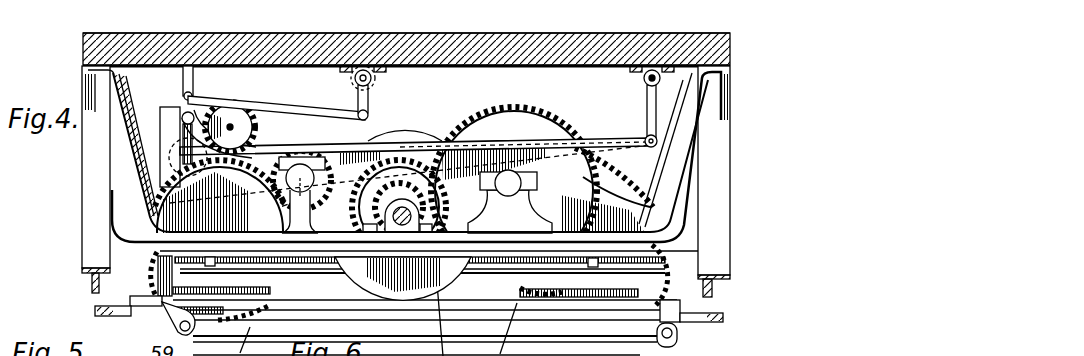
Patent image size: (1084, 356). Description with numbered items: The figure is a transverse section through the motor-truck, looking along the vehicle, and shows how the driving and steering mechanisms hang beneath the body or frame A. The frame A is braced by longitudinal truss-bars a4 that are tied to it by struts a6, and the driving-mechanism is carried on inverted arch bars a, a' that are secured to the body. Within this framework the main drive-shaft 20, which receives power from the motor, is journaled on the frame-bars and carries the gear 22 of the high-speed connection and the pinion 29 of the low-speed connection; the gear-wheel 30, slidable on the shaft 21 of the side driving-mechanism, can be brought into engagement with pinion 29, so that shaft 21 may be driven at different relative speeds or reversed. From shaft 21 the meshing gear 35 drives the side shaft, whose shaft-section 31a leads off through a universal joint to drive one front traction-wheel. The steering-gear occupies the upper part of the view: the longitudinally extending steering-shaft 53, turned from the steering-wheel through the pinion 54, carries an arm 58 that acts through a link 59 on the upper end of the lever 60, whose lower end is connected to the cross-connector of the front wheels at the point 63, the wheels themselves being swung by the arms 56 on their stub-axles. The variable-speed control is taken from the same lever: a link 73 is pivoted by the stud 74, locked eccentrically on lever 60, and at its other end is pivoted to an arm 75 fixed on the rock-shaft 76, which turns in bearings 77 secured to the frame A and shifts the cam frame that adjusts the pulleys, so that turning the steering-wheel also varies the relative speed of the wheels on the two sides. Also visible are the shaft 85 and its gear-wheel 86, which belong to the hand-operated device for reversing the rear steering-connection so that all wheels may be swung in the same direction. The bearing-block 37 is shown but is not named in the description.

The bearings 77 is at (700, 62).
The body or frame A is at (675, 62).
The struts a6 is at (88, 188).
The longitudinal truss-bars a4 is at (730, 277).
The inverted arch bar a is at (438, 157).
The inverted arch bar a' is at (405, 150).
The gear 35 is at (140, 287).
The arm 56 is at (126, 310).
The connection to cross-connector 63 is at (676, 334).
The shaft-section 31a is at (207, 262).
The main drive-shaft 20 is at (400, 227).
The link 73 is at (293, 149).
The pinion 54 is at (318, 167).
The bearing 37 is at (302, 195).
The pinion 29 is at (408, 190).
The gear 22 is at (391, 162).
The gear-wheel 30 is at (512, 110).
The shaft 21 is at (514, 187).
The arm 75 is at (647, 100).
The rock-shaft 76 is at (655, 72).
The stud 74 is at (205, 66).
The lever 60 is at (170, 110).
The gear-wheel 86 is at (254, 133).
The shaft 85 is at (231, 125).
The link 59 is at (292, 110).
The arm 58 is at (353, 90).
The steering-shaft 53 is at (366, 72).